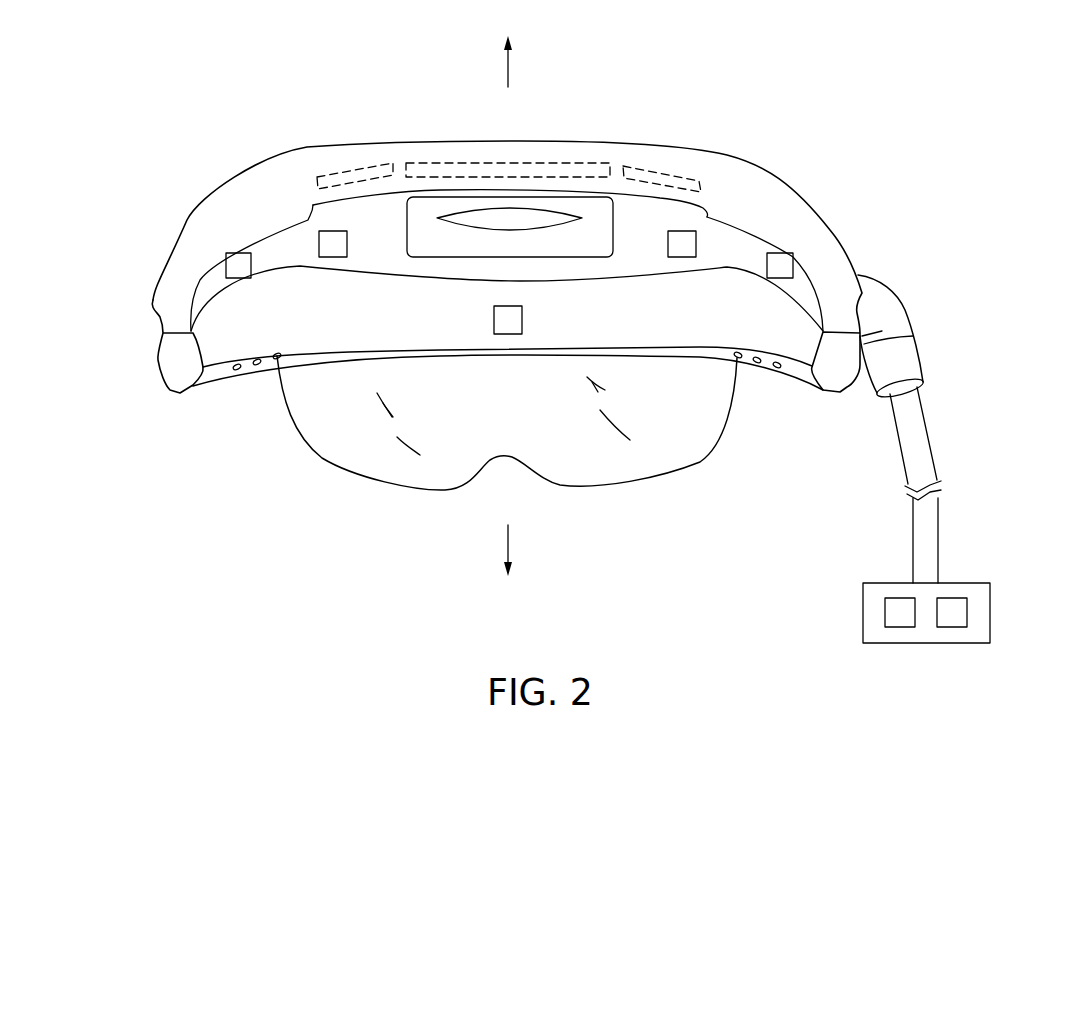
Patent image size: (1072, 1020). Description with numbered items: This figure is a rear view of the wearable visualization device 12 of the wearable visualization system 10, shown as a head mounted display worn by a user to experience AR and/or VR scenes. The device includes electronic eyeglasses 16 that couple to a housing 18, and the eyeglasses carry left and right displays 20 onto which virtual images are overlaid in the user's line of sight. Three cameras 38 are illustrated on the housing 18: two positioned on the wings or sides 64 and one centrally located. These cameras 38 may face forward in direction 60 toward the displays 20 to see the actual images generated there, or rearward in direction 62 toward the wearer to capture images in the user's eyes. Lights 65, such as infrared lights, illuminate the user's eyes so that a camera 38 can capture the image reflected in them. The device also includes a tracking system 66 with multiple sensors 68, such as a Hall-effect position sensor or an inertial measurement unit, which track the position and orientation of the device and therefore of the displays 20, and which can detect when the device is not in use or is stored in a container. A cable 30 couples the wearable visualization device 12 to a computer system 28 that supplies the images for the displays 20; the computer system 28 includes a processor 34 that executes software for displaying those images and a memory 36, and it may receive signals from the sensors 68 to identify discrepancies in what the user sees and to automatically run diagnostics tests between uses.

The wearable visualization system 10 is at (266, 600).
The wearable visualization device 12 is at (791, 120).
The electronic eyeglasses 16 is at (440, 487).
The housing 18 is at (773, 166).
The displays 20 is at (375, 478).
The computer system 28 is at (990, 613).
The cable 30 is at (928, 433).
The processor 34 is at (900, 627).
The memory 36 is at (950, 627).
The cameras 38 is at (228, 256).
The direction 60 is at (509, 70).
The direction 62 is at (509, 545).
The sides 64 is at (243, 303).
The lights 65 is at (333, 257).
The tracking system 66 is at (270, 101).
The sensors 68 is at (356, 167).